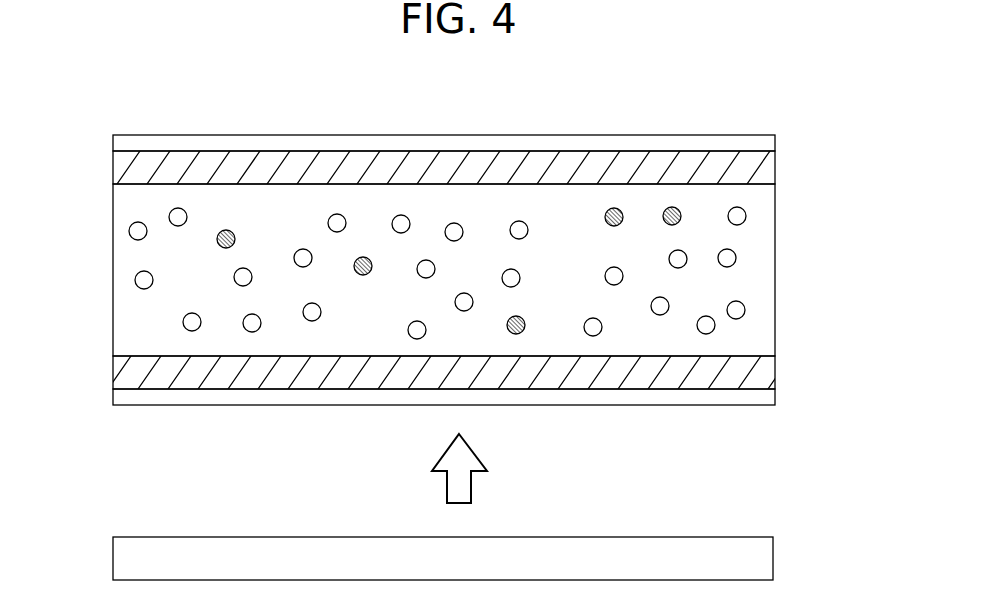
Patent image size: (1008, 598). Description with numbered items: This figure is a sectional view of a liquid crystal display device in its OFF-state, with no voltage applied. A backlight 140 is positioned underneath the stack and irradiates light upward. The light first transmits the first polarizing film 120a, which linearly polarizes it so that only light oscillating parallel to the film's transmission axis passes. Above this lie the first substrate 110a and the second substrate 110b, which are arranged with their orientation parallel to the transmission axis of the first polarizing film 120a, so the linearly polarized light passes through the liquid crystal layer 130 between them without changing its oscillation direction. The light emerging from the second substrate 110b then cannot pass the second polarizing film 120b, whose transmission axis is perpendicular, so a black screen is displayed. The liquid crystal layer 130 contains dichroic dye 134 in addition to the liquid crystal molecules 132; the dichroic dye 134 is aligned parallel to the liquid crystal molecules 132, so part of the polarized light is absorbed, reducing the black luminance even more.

The second polarizing film 120b is at (775, 145).
The second substrate 110b is at (775, 175).
The liquid crystal layer 130 is at (770, 267).
The dichroic dye 134 is at (217, 240).
The liquid crystal molecules 132 is at (135, 280).
The first substrate 110a is at (770, 375).
The first polarizing film 120a is at (770, 402).
The backlight 140 is at (768, 557).